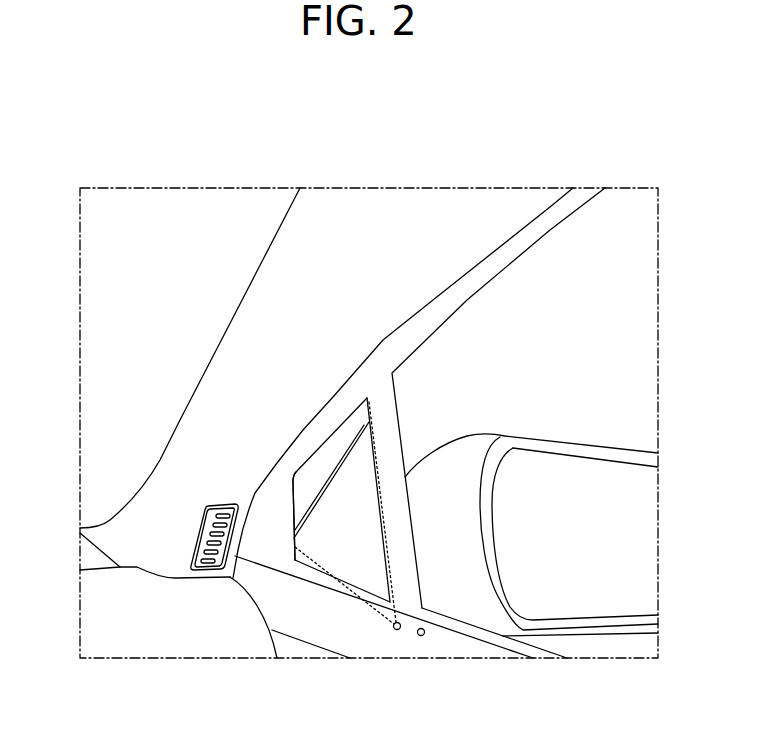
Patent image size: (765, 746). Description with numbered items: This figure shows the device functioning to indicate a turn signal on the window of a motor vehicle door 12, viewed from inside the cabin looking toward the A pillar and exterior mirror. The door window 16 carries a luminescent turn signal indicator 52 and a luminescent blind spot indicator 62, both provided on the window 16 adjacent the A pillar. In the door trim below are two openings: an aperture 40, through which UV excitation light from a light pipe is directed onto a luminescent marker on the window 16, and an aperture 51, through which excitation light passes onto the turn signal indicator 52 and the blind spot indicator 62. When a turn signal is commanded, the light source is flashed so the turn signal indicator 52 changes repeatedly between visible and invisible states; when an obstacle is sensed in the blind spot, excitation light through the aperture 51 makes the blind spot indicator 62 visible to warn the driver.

The motor vehicle door 12 is at (322, 632).
The window 16 is at (357, 534).
The aperture 40 is at (423, 637).
The aperture 51 is at (395, 630).
The luminescent turn signal indicator 52 is at (320, 468).
The luminescent blind spot indicator 62 is at (320, 506).